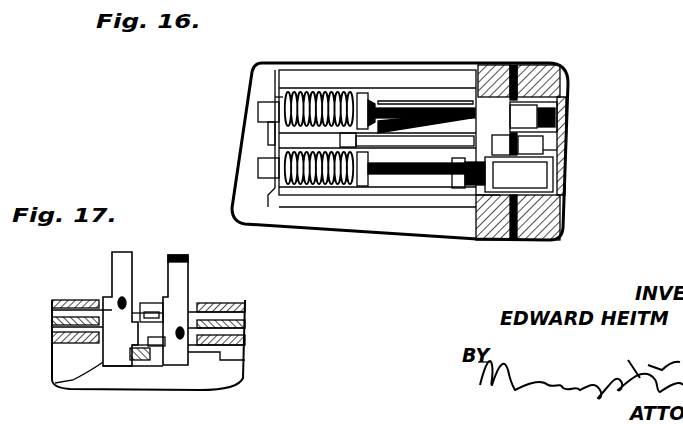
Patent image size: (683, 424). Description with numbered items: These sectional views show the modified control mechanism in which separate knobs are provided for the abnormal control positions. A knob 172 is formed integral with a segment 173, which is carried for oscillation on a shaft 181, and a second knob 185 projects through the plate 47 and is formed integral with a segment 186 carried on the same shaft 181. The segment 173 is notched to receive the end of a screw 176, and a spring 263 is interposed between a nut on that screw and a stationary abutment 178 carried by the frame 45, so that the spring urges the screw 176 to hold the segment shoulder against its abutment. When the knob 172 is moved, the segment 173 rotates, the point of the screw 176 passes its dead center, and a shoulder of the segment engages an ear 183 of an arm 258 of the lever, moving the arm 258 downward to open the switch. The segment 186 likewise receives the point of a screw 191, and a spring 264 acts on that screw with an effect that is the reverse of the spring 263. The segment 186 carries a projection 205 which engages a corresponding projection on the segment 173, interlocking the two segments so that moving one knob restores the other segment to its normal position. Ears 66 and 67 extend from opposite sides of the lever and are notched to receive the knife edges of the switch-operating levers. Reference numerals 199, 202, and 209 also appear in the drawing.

In FIG. 17, the frame 45 is at (246, 328).
In FIG. 17, the plate 47 is at (246, 308).
In FIG. 16, the ear 66 is at (395, 98).
In FIG. 16, the ear 67 is at (392, 150).
In FIG. 16, the knob 172 is at (558, 110).
In FIG. 17, the knob 172 is at (126, 242).
In FIG. 16, the segment 173 is at (495, 64).
In FIG. 17, the segment 173 is at (76, 386).
In FIG. 16, the screw 176 is at (430, 100).
In FIG. 17, the screw 176 is at (116, 302).
In FIG. 16, the stationary abutment 178 is at (277, 97).
In FIG. 16, the shaft 181 is at (517, 240).
In FIG. 17, the shaft 181 is at (64, 300).
In FIG. 16, the ear 183 is at (534, 63).
In FIG. 17, the ear 183 is at (114, 368).
In FIG. 16, the knob 185 is at (493, 194).
In FIG. 17, the knob 185 is at (180, 273).
In FIG. 16, the segment 186 is at (560, 183).
In FIG. 17, the segment 186 is at (244, 360).
In FIG. 16, the screw 191 is at (455, 185).
In FIG. 17, the screw 191 is at (210, 302).
In FIG. 16, the housing wall 199 is at (272, 200).
In FIG. 16, the pin 202 is at (470, 192).
In FIG. 17, the pin 202 is at (184, 345).
In FIG. 16, the projection 205 is at (557, 151).
In FIG. 17, the projection 205 is at (156, 305).
In FIG. 16, the block 209 is at (557, 136).
In FIG. 17, the block 209 is at (149, 308).
In FIG. 16, the arm 258 is at (418, 178).
In FIG. 17, the arm 258 is at (149, 361).
In FIG. 16, the spring 263 is at (327, 98).
In FIG. 16, the spring 264 is at (340, 187).